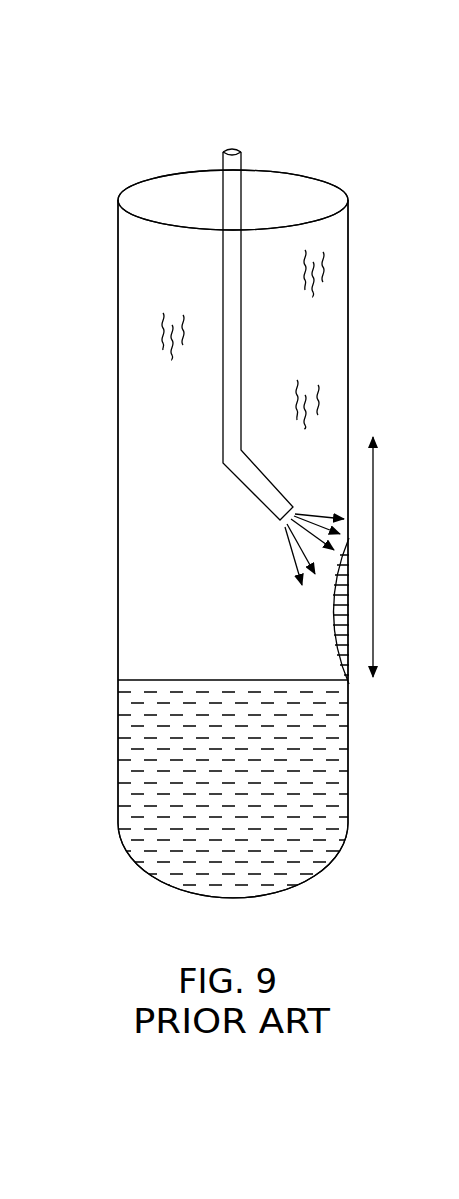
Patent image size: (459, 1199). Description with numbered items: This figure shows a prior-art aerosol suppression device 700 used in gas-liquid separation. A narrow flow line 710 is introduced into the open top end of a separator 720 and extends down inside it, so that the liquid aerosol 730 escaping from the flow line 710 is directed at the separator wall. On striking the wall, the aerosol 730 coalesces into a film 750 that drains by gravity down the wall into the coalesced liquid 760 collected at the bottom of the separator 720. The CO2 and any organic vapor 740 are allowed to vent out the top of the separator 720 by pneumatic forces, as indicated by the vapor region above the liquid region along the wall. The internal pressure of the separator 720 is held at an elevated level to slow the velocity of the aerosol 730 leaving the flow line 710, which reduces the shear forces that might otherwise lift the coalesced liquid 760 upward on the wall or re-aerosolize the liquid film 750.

The device 700 is at (338, 66).
The flow line 710 is at (232, 150).
The separator 720 is at (117, 405).
The liquid aerosol 730 is at (299, 515).
The organic vapor 740 is at (328, 266).
The film 750 is at (349, 681).
The coalesced liquid 760 is at (349, 778).